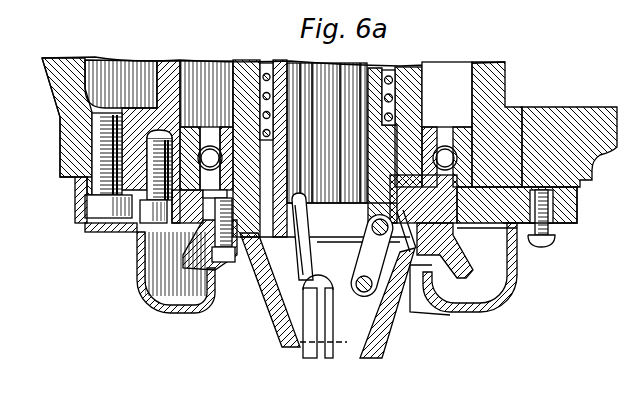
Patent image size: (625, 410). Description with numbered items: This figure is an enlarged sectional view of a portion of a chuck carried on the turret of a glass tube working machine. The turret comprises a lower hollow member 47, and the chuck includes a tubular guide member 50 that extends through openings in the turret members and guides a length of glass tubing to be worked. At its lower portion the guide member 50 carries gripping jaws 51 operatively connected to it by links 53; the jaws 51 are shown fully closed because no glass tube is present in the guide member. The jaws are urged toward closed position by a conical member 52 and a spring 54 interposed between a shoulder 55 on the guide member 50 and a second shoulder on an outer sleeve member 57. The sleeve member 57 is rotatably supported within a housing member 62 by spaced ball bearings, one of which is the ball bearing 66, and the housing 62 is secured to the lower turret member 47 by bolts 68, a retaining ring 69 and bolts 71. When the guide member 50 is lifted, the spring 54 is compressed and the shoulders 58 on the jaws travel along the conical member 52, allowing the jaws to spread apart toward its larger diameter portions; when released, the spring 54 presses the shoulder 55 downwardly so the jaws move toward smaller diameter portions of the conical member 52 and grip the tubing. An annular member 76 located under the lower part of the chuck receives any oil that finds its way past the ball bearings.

The hollow member 47 is at (600, 97).
The tubular guide member 50 is at (376, 68).
The gripping jaws 51 is at (354, 358).
The conical member 52 is at (268, 328).
The links 53 is at (378, 264).
The spring 54 is at (392, 80).
The shoulder 55 is at (377, 143).
The outer sleeve member 57 is at (264, 44).
The shoulders 58 is at (398, 334).
The housing member 62 is at (506, 108).
The ball bearing 66 is at (447, 124).
The bolts 68 is at (135, 236).
The retaining ring 69 is at (80, 198).
The bolts 71 is at (103, 153).
The annular member 76 is at (518, 291).